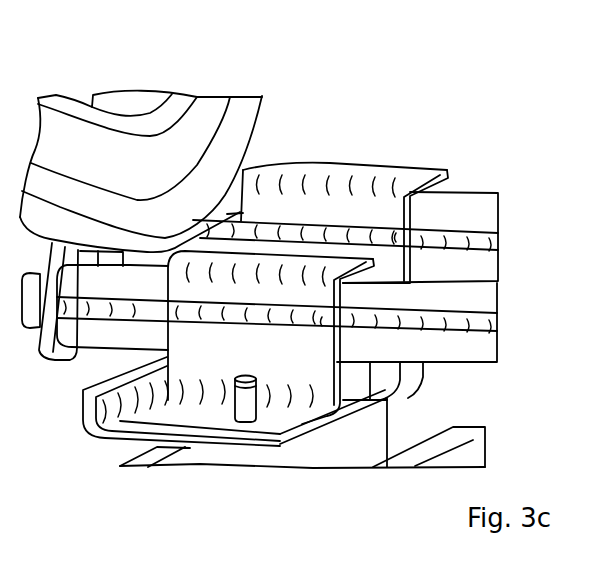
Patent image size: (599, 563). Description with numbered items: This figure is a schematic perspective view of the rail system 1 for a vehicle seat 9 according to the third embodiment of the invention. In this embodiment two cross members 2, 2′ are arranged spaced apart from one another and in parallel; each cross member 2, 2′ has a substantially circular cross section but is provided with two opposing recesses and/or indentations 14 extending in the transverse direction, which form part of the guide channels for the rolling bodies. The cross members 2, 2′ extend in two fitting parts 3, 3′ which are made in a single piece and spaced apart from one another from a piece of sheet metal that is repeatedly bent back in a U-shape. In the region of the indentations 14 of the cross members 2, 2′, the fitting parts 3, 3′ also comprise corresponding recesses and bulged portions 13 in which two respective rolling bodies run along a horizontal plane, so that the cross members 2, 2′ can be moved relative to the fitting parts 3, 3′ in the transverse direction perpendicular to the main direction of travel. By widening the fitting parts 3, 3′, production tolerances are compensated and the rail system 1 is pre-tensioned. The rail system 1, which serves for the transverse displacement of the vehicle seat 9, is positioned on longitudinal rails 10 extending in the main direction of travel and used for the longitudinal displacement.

The rail system 1 is at (463, 143).
The cross member 2 is at (463, 207).
The cross member 2′ is at (487, 300).
The fitting part 3 is at (343, 165).
The fitting part 3′ is at (317, 367).
The vehicle seat 9 is at (203, 113).
The longitudinal rail 10 is at (343, 450).
The recesses and bulged portions 13 is at (498, 243).
The recesses and/or indentations 14 is at (400, 238).